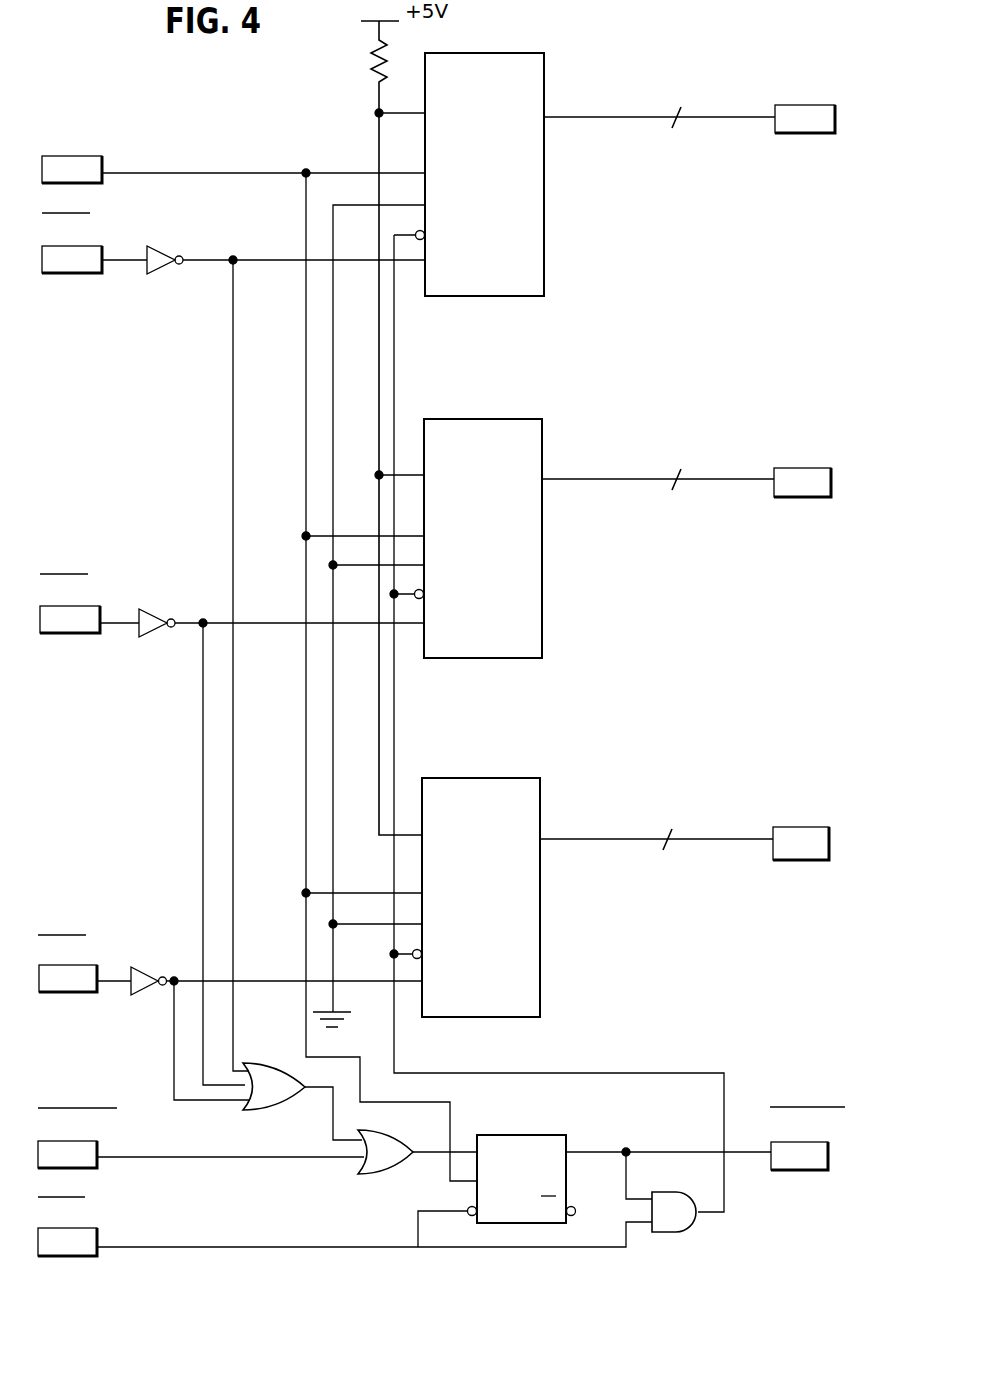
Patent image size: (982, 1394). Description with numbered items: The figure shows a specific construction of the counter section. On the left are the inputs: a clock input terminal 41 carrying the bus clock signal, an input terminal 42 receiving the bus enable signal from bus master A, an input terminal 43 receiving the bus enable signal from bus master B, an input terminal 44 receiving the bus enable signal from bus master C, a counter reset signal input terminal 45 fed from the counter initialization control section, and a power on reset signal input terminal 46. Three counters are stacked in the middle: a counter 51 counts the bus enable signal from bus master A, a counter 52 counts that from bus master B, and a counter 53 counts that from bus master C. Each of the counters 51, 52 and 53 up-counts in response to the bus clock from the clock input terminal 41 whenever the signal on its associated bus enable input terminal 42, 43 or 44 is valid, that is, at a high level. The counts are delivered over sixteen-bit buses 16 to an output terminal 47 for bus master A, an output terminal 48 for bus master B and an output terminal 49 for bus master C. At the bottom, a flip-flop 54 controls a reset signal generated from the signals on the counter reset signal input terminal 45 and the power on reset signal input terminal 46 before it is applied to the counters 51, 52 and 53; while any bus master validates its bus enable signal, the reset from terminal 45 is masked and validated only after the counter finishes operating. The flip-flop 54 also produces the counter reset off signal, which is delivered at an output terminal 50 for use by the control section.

The 16-bit bus 16 is at (657, 493).
The clock input terminal 41 is at (103, 184).
The input terminal 42 is at (103, 270).
The input terminal 43 is at (101, 630).
The input terminal 44 is at (98, 988).
The counter reset signal input terminal 45 is at (100, 1165).
The power on reset signal input terminal 46 is at (100, 1256).
The output terminal 47 is at (818, 128).
The output terminal 48 is at (812, 497).
The output terminal 49 is at (815, 855).
The output terminal 50 is at (810, 1165).
The counter 51 is at (517, 57).
The counter 52 is at (512, 422).
The counter 53 is at (506, 780).
The flip-flop 54 is at (522, 1138).